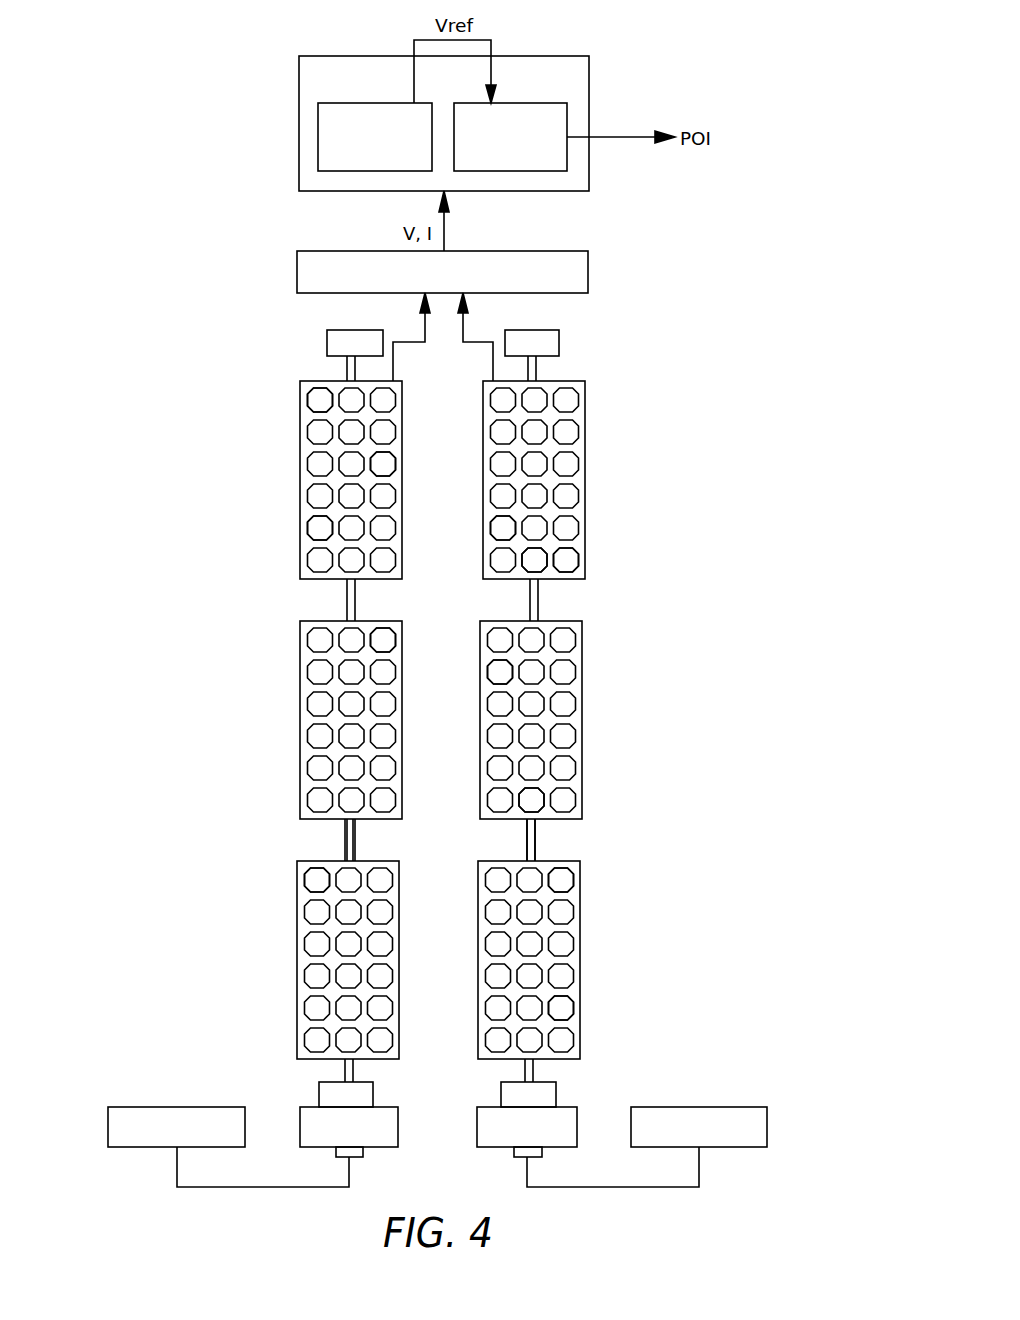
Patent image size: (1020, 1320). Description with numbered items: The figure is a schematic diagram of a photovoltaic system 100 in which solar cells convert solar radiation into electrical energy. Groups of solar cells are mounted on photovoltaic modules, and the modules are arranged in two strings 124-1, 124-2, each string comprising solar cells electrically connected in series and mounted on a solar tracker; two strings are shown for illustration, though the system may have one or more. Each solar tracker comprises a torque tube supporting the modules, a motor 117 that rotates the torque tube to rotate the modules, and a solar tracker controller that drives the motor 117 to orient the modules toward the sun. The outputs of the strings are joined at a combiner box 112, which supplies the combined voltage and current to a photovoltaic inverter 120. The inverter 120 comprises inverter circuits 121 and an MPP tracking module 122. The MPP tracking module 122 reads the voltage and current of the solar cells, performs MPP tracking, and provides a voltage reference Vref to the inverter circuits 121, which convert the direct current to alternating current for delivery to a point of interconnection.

The photovoltaic system 100 is at (195, 35).
The combiner box 112 is at (557, 251).
The motor 117 is at (477, 1147).
The photovoltaic inverter 120 is at (553, 56).
The inverter circuits 121 is at (543, 103).
The MPP tracking module 122 is at (318, 140).
The string 124-1 is at (215, 722).
The string 124-2 is at (707, 735).